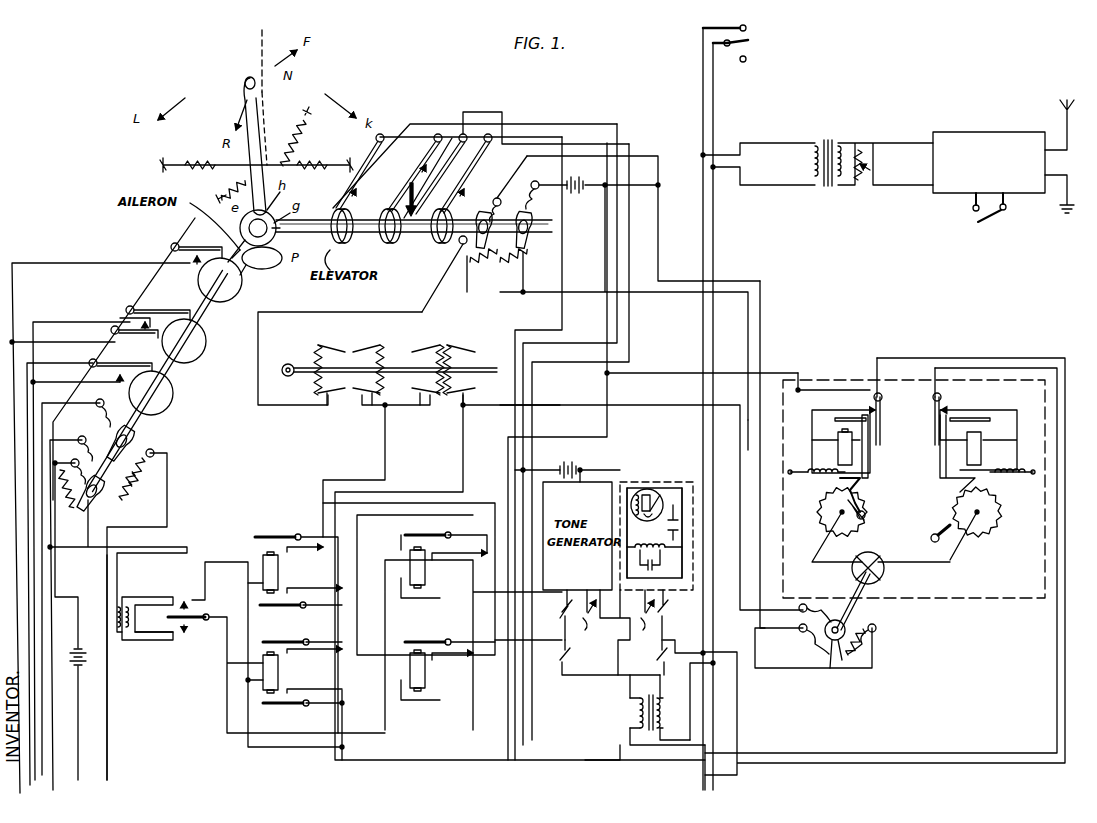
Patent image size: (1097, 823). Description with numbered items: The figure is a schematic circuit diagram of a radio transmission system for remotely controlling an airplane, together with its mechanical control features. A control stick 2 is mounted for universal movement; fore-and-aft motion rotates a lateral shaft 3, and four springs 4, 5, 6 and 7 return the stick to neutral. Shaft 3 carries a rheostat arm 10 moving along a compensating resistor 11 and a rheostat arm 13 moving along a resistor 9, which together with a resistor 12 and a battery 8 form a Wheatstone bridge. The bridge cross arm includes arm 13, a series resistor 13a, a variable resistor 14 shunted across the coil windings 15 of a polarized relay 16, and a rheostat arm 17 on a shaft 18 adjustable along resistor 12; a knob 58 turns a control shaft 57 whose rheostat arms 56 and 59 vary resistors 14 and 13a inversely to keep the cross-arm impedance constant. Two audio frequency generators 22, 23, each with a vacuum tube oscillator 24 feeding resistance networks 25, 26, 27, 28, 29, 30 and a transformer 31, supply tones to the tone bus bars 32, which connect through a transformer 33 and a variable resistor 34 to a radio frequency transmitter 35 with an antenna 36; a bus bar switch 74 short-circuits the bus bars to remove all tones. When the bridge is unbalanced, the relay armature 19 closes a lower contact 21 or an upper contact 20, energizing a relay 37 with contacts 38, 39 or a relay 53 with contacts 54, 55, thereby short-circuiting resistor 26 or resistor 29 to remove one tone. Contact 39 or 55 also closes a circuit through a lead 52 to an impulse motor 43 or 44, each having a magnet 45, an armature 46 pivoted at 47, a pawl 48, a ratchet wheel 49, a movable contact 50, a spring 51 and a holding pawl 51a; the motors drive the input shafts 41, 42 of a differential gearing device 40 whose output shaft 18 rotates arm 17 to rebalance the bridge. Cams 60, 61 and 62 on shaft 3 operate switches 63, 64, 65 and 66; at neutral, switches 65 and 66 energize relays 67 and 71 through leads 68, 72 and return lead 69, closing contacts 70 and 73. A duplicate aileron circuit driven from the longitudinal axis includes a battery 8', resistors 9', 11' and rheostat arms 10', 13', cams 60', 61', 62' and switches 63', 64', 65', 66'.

The control lever or stick 2 is at (246, 86).
The second shaft 3 is at (272, 236).
The spring 4 is at (324, 158).
The spring 5 is at (228, 190).
The spring 6 is at (212, 158).
The spring 7 is at (290, 130).
The battery 8 is at (598, 195).
The battery 8' is at (72, 671).
The resistor 9 is at (479, 260).
The resistor 9' is at (152, 468).
The rheostat arm 10 is at (535, 215).
The rheostat arm 10' is at (90, 497).
The compensating resistor 11 is at (511, 268).
The compensating resistor 11' is at (130, 490).
The resistor 12 is at (872, 655).
The rheostat arm 13 is at (499, 202).
The rheostat arm 13' is at (124, 440).
The series resistor 13a is at (365, 356).
The variable resistor 14 is at (440, 355).
The coil winding 15 is at (124, 597).
The polarized or galvanometer relay 16 is at (164, 642).
The rheostat arm 17 is at (828, 662).
The shaft 18 is at (855, 610).
The relay armature 19 is at (208, 612).
The upper contact 20 is at (198, 596).
The lower contact 21 is at (200, 636).
The audio frequency generator 22 is at (670, 482).
The audio frequency generator 23 is at (595, 480).
The vacuum tube oscillator 24 is at (645, 490).
The resistor 25 is at (668, 614).
The resistor 26 is at (645, 626).
The resistor 27 is at (660, 660).
The resistor 28 is at (566, 612).
The resistor 29 is at (580, 630).
The resistor 30 is at (566, 656).
The transformer 31 is at (652, 736).
The tone bus bars 32 is at (716, 100).
The transformer 33 is at (826, 133).
The variable resistor 34 is at (866, 180).
The radio frequency transmitter 35 is at (988, 132).
The antenna 36 is at (1062, 112).
The relay 37 is at (279, 675).
The upper contact 38 is at (274, 632).
The lower contact 39 is at (280, 705).
The differential gearing device 40 is at (886, 576).
The input shaft 41 is at (955, 562).
The input shaft 42 is at (810, 560).
The impulse motor 43 is at (852, 385).
The impulse motor 44 is at (984, 398).
The magnet 45 is at (836, 450).
The armature 46 is at (870, 458).
The pivot 47 is at (866, 418).
The pawl 48 is at (868, 486).
The ratchet wheel 49 is at (820, 535).
The movable contact 50 is at (882, 415).
The spring 51 is at (812, 482).
The holding pawl 51a is at (870, 516).
The lead 52 is at (564, 242).
The relay 53 is at (279, 572).
The contact 54 is at (286, 532).
The lower contact 55 is at (296, 606).
The rheostat arm 56 is at (470, 352).
The control shaft 57 is at (400, 370).
The operating knob 58 is at (284, 376).
The rheostat arm 59 is at (332, 355).
The cam 60 is at (334, 233).
The cam 60' is at (168, 393).
The cam 61 is at (383, 233).
The cam 61' is at (202, 340).
The cam 62 is at (434, 233).
The cam 62' is at (238, 276).
The switch 63 is at (352, 171).
The switch contact 63' is at (120, 377).
The switch 64 is at (477, 173).
The switch contact 64' is at (196, 242).
The switch 65 is at (420, 176).
The contact 65' is at (158, 302).
The switch 66 is at (517, 163).
The contact 66' is at (134, 337).
The relay 67 is at (428, 674).
The lead 68 is at (620, 330).
The lead 69 is at (607, 385).
The switch contact 70 is at (428, 640).
The relay 71 is at (428, 570).
The lead 72 is at (629, 306).
The switch contact 73 is at (412, 532).
The bus bar switch 74 is at (760, 40).